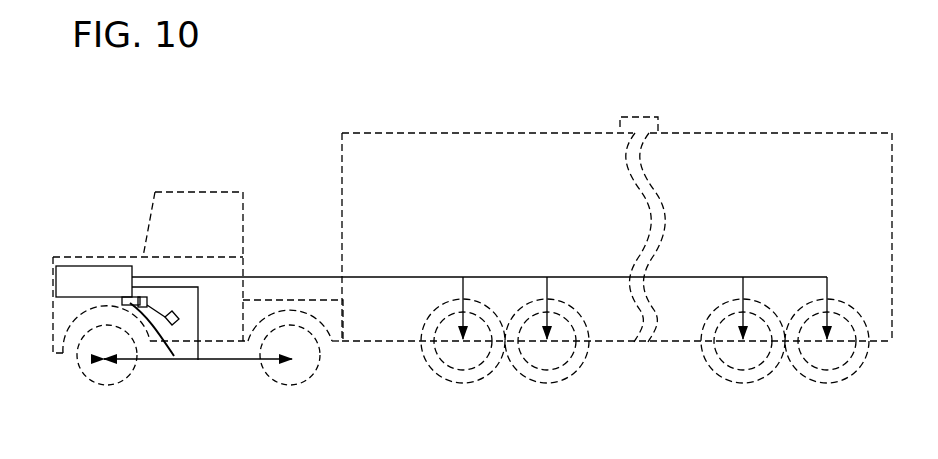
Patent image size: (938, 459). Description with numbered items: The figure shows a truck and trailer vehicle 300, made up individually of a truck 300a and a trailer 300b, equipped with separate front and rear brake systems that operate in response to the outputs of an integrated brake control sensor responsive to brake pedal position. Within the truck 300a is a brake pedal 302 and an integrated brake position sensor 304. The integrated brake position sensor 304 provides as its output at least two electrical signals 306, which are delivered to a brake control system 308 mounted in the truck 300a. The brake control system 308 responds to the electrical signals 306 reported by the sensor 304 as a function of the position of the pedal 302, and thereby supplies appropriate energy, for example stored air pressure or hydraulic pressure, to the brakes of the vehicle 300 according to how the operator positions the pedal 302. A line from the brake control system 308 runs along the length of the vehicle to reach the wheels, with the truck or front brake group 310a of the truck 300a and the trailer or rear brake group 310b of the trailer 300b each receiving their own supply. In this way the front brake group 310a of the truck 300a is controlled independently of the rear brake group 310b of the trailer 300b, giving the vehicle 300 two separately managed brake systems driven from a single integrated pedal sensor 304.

The truck and trailer vehicle 300 is at (174, 134).
The truck 300a is at (245, 203).
The trailer 300b is at (380, 138).
The brake pedal 302 is at (150, 298).
The integrated brake position sensor 304 is at (145, 297).
The electrical signals 306 is at (174, 356).
The brake control system 308 is at (60, 266).
The front brake group 310a is at (107, 360).
The rear brake group 310b is at (464, 343).